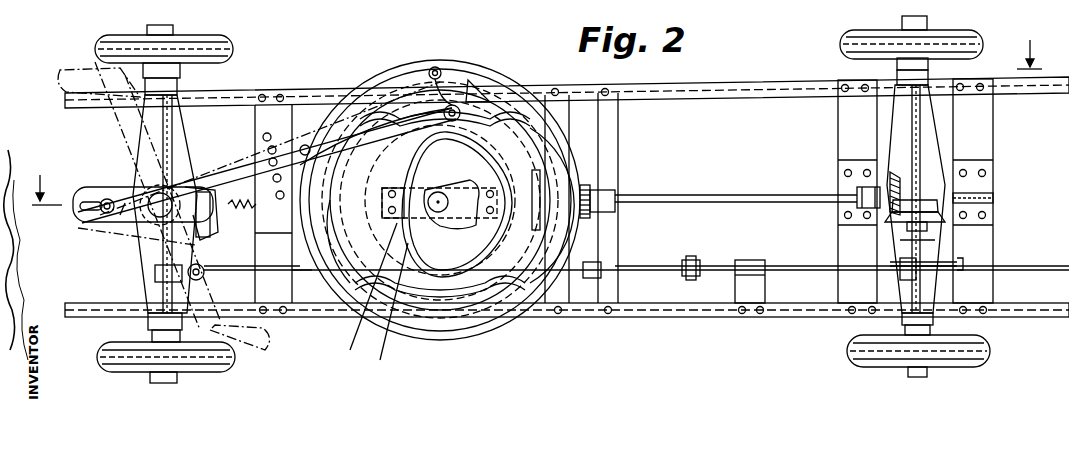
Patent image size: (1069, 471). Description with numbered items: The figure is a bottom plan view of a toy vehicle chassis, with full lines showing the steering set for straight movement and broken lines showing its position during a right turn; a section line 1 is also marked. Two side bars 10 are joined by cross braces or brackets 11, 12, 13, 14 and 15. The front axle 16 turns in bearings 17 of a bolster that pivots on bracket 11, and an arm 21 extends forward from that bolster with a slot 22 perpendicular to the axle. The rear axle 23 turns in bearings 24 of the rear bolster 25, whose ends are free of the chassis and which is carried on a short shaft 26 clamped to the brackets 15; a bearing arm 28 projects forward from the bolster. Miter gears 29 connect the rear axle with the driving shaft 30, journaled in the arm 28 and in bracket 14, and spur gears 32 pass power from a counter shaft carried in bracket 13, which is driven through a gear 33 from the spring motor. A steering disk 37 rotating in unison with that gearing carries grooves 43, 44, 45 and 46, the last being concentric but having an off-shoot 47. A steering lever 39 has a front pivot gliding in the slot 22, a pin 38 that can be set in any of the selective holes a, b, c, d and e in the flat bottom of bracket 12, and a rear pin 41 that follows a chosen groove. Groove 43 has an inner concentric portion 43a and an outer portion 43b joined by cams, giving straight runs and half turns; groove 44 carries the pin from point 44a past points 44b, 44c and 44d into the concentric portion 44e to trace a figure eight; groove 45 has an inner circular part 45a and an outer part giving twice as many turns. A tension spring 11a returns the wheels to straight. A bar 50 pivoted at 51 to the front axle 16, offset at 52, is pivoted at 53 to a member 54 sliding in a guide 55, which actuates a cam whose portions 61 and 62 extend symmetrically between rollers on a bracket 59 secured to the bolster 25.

The section line 1 is at (534, 122).
The side bars 10 is at (750, 88).
The cross brace 11 is at (152, 237).
The tension spring 11a is at (210, 218).
The bracket 12 is at (277, 290).
The bracket 13 is at (560, 110).
The bracket 14 is at (612, 108).
The brackets 15 is at (843, 116).
The front axle 16 is at (163, 135).
The bearings 17 is at (175, 80).
The arm 21 is at (81, 188).
The slot 22 is at (106, 198).
The rear axle 23 is at (912, 134).
The bearings 24 is at (900, 72).
The rear bolster 25 is at (935, 238).
The shaft 26 is at (958, 196).
The bearing arm 28 is at (862, 193).
The miter gears 29 is at (900, 178).
The driving shaft 30 is at (775, 195).
The spur gears 32 is at (598, 176).
The gear 33 is at (608, 232).
The steering disk 37 is at (454, 323).
The pin 38 is at (290, 144).
The steering lever 39 is at (350, 126).
The pin 41 is at (450, 105).
The groove 43 is at (434, 226).
The inner concentric portion 43a is at (427, 188).
The outer concentric portion 43b is at (483, 198).
The groove 44 is at (405, 250).
The point 44a is at (412, 108).
The point 44b is at (385, 188).
The point 44c is at (400, 223).
The point 44d is at (420, 295).
The concentric portion 44e is at (520, 300).
The groove 45 is at (500, 120).
The inner circular part 45a is at (470, 293).
The groove 46 is at (443, 333).
The off-shoot 47 is at (463, 110).
The bar 50 is at (308, 275).
The pivot 51 is at (158, 291).
The offset 52 is at (592, 278).
The pivot 53 is at (690, 258).
The member 54 is at (718, 264).
The guide 55 is at (754, 292).
The bracket 59 is at (900, 278).
The cam portion 61 is at (895, 256).
The cam portion 62 is at (963, 265).
The selective hole a is at (276, 198).
The selective hole b is at (272, 180).
The selective hole c is at (258, 198).
The selective hole d is at (267, 150).
The selective hole e is at (262, 135).